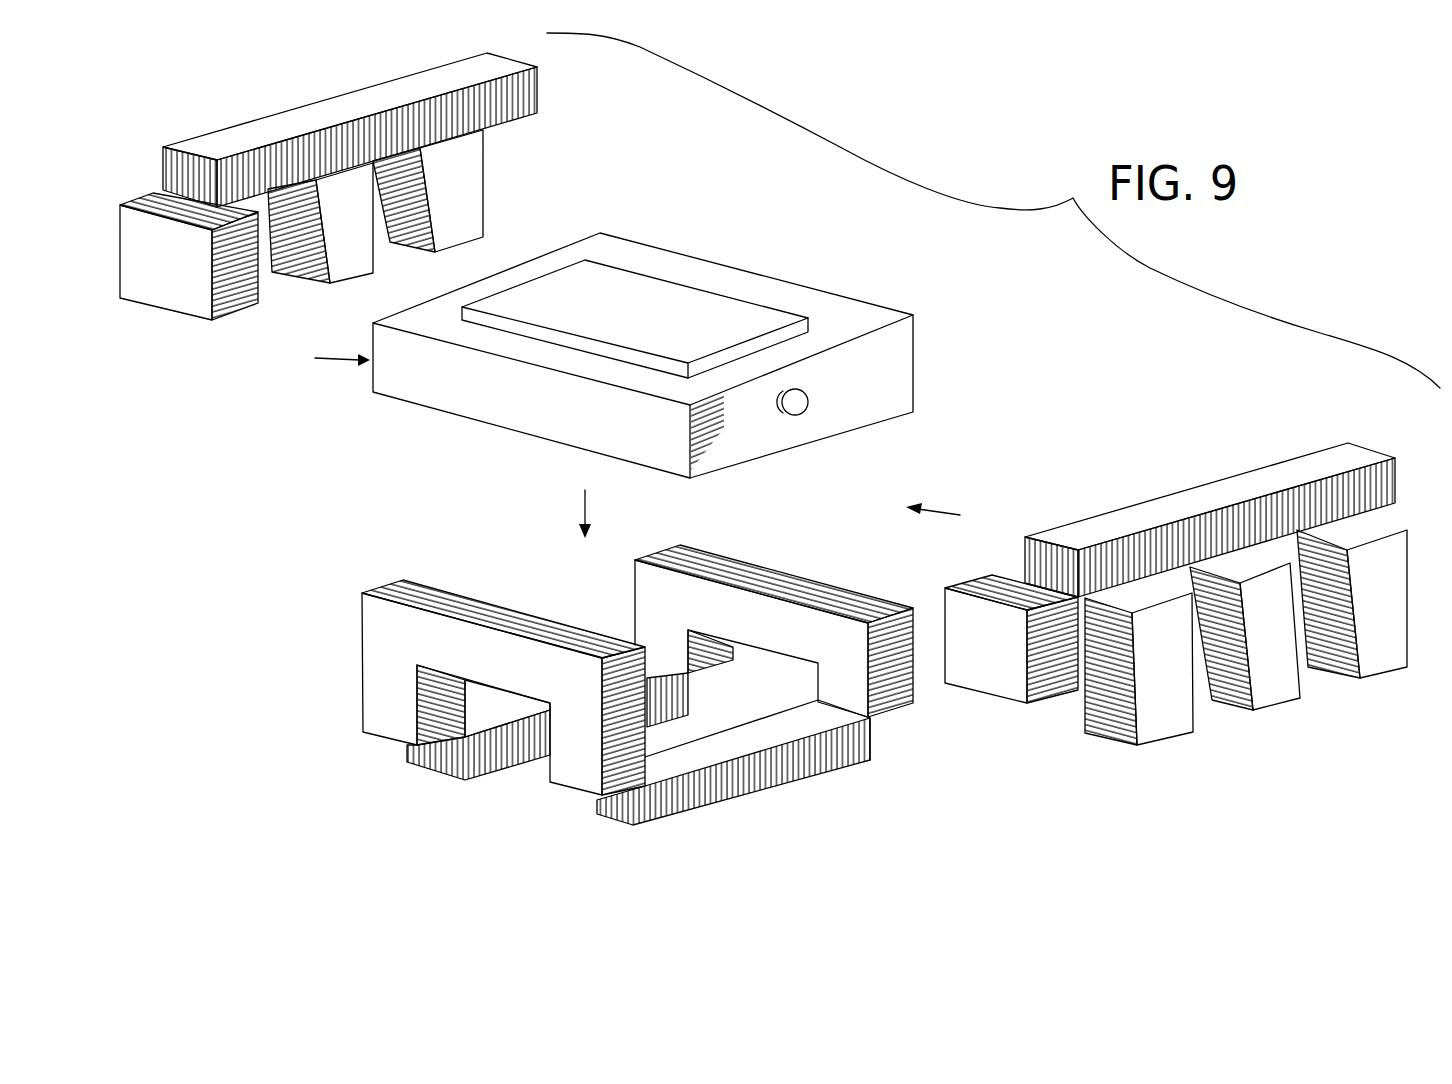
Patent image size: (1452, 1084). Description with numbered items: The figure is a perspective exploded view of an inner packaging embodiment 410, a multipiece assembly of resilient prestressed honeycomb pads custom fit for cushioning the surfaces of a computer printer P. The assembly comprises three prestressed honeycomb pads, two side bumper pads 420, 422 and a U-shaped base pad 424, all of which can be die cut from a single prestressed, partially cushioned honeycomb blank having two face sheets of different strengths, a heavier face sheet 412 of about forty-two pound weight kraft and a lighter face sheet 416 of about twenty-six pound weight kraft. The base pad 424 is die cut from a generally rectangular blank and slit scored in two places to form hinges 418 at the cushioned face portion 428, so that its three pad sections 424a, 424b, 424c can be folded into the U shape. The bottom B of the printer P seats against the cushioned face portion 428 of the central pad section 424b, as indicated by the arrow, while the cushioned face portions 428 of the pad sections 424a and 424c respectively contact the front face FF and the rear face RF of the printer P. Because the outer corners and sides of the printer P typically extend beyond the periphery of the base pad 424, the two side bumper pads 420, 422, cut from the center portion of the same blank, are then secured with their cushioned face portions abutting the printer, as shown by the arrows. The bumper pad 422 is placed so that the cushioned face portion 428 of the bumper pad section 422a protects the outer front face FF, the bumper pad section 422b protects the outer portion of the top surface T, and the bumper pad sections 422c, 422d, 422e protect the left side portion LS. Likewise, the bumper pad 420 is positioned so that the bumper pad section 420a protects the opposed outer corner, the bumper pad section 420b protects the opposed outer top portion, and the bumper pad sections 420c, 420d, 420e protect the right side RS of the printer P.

The inner packaging embodiment 410 is at (1055, 420).
The face sheet 412 is at (472, 67).
The face sheet 416 is at (258, 210).
The hinge 418 is at (600, 804).
The side bumper pad 420 is at (1184, 589).
The bumper pad section 420a is at (945, 608).
The bumper pad section 420b is at (1057, 528).
The bumper pad section 420c is at (1112, 745).
The bumper pad section 420d is at (1240, 727).
The bumper pad section 420e is at (1348, 675).
The side bumper pad 422 is at (373, 210).
The bumper pad section 422a is at (237, 310).
The bumper pad section 422b is at (523, 119).
The bumper pad section 422c is at (270, 277).
The bumper pad section 422d is at (372, 277).
The bumper pad section 422e is at (483, 213).
The U-shaped base pad 424 is at (670, 675).
The pad section 424a is at (493, 603).
The pad section 424b is at (683, 757).
The pad section 424c is at (858, 665).
The cushioned face portion 428 is at (533, 97).
The printer P is at (842, 290).
The top surface T is at (652, 262).
The left side portion LS is at (585, 236).
The right side RS is at (867, 410).
The rear face RF is at (913, 360).
The front face FF is at (543, 417).
The bottom B is at (411, 410).